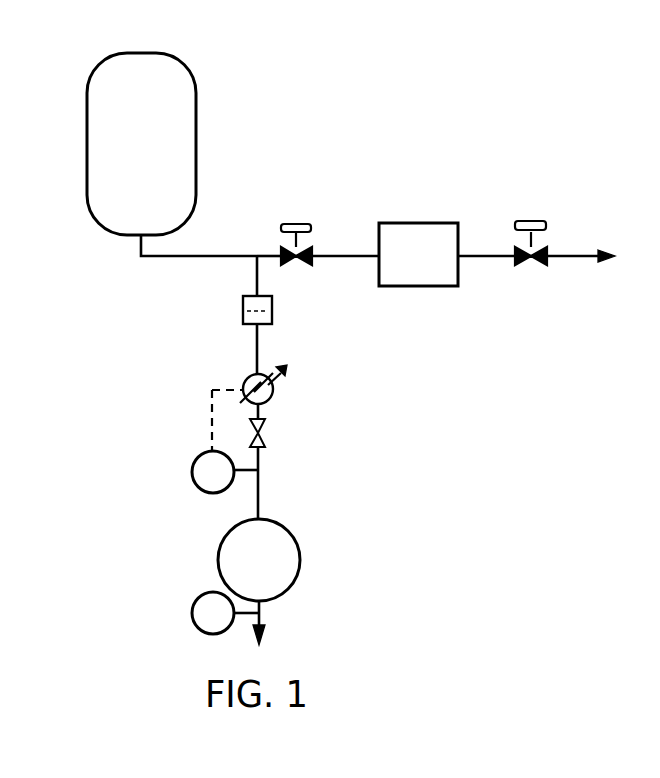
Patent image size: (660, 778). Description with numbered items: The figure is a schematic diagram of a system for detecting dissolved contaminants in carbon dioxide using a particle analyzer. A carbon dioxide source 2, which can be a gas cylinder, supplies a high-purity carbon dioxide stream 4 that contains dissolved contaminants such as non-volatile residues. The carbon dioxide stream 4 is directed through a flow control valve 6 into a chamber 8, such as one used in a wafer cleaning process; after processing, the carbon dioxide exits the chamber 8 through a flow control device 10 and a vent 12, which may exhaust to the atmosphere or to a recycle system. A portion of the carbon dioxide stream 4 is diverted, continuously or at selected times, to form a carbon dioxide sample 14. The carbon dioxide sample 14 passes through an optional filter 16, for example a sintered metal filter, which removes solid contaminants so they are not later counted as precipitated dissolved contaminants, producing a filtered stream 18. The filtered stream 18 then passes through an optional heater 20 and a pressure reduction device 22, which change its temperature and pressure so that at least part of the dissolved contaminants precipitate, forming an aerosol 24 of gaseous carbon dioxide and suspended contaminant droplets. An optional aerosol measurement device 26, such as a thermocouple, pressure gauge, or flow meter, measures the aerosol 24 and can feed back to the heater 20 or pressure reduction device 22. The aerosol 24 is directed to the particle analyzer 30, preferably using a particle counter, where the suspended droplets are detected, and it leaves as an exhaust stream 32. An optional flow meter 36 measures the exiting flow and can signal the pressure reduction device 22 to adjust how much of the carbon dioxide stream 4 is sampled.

The carbon dioxide source 2 is at (141, 144).
The carbon dioxide stream 4 is at (233, 253).
The flow control valve 6 is at (297, 223).
The chamber 8 is at (418, 254).
The flow control device 10 is at (531, 265).
The vent 12 is at (578, 257).
The carbon dioxide sample 14 is at (255, 274).
The filter 16 is at (273, 310).
The filtered stream 18 is at (255, 349).
The heater 20 is at (275, 392).
The pressure reduction device 22 is at (266, 433).
The aerosol 24 is at (262, 491).
The aerosol measurement device 26 is at (225, 472).
The particle analyzer 30 is at (259, 560).
The exhaust stream 32 is at (265, 618).
The flow meter 36 is at (225, 613).